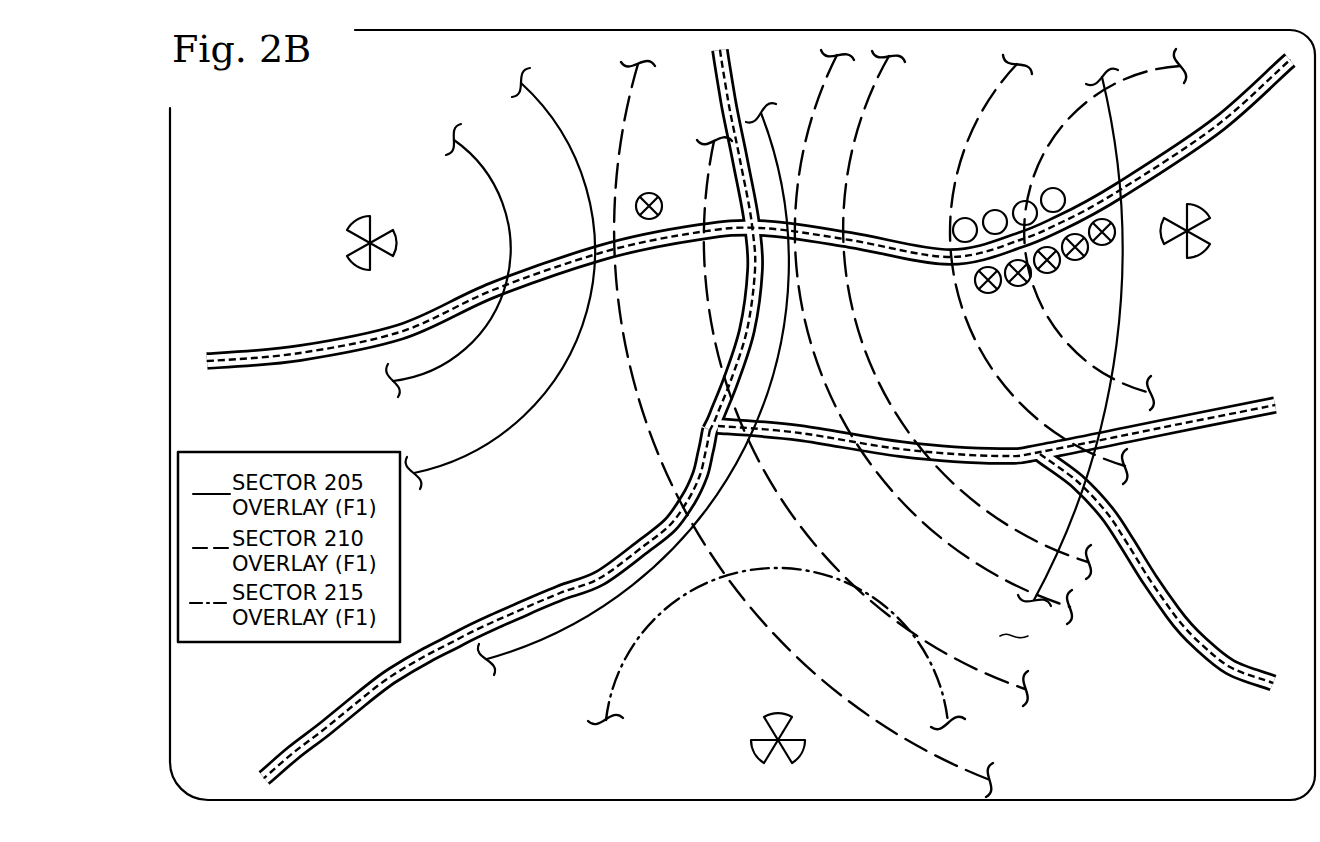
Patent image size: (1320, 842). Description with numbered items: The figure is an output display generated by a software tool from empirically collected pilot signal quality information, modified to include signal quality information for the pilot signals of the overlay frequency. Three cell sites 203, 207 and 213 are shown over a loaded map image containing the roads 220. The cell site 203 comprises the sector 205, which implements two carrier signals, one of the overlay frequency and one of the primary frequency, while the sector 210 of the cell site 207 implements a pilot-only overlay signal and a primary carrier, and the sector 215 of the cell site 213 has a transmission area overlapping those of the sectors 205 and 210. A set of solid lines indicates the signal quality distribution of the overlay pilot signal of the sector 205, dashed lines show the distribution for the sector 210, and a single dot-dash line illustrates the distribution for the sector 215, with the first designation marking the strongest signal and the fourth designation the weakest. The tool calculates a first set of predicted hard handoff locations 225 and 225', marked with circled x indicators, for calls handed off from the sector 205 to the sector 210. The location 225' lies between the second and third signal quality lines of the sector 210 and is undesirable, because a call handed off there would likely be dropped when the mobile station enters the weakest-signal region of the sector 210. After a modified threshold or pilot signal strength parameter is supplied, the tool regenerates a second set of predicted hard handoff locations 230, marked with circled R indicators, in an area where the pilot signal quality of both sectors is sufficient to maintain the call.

The cell site 203 is at (372, 205).
The sector 205 is at (396, 242).
The cell site 207 is at (1190, 189).
The sector 210 is at (1160, 232).
The cell site 213 is at (826, 736).
The sector 215 is at (778, 714).
The roads 220 is at (481, 618).
The first set of predicted hard handoff locations 225 is at (1045, 288).
The predicted hard handoff location 225' is at (662, 183).
The second set of predicted hard handoff locations 230 is at (1051, 188).